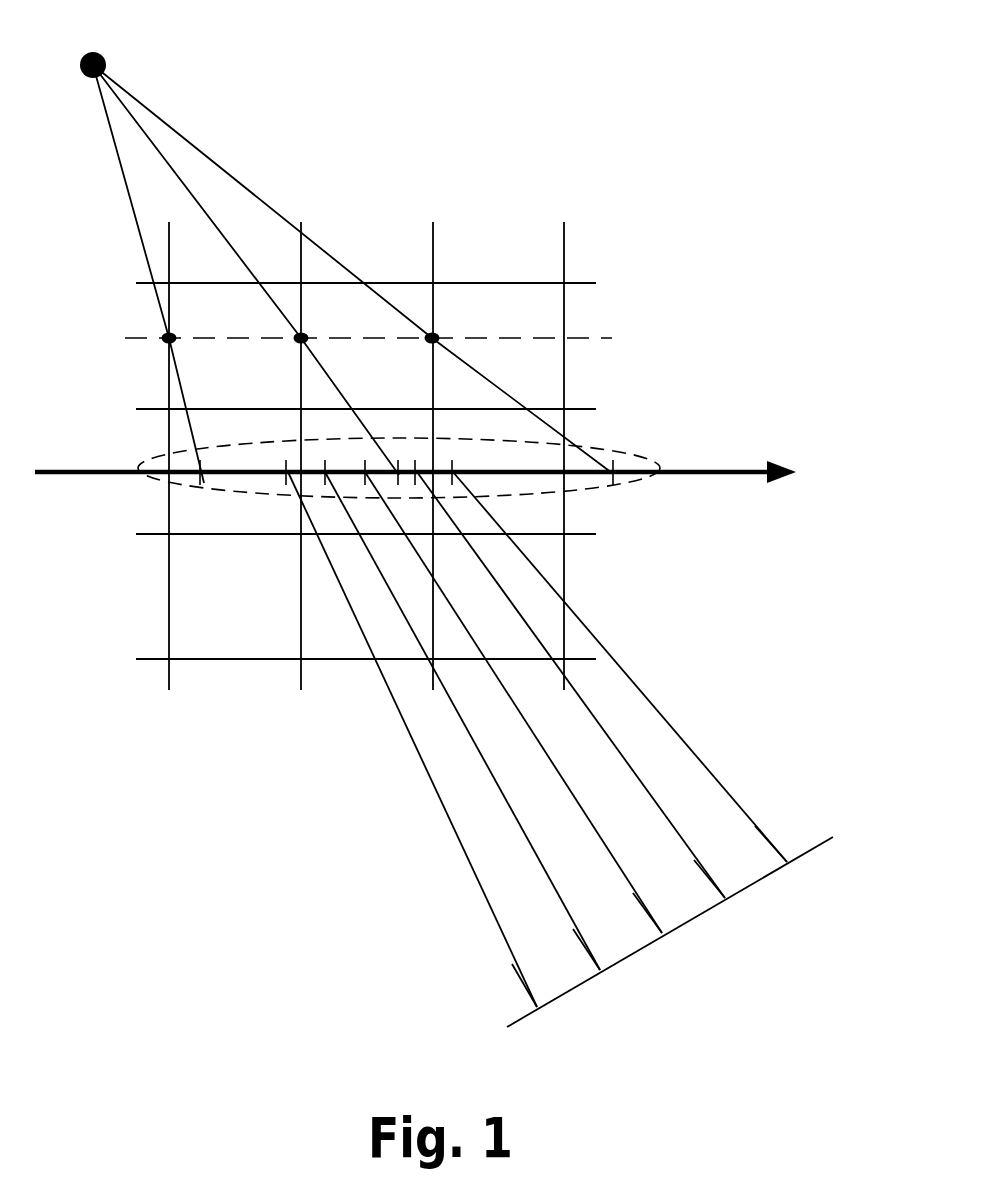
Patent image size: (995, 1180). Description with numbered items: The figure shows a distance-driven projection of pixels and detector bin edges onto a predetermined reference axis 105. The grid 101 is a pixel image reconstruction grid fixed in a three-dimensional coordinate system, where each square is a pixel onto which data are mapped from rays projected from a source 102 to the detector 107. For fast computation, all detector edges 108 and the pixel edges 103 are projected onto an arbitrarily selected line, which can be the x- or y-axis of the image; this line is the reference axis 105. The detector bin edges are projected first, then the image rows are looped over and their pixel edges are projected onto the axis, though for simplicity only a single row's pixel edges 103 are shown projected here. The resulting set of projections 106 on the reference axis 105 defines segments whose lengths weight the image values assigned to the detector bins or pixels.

The grid 101 is at (563, 238).
The source 102 is at (104, 54).
The pixel edges 103 is at (165, 345).
The reference axis 105 is at (685, 473).
The set of projections 106 is at (600, 445).
The detector 107 is at (813, 848).
The detector edges 108 is at (773, 832).